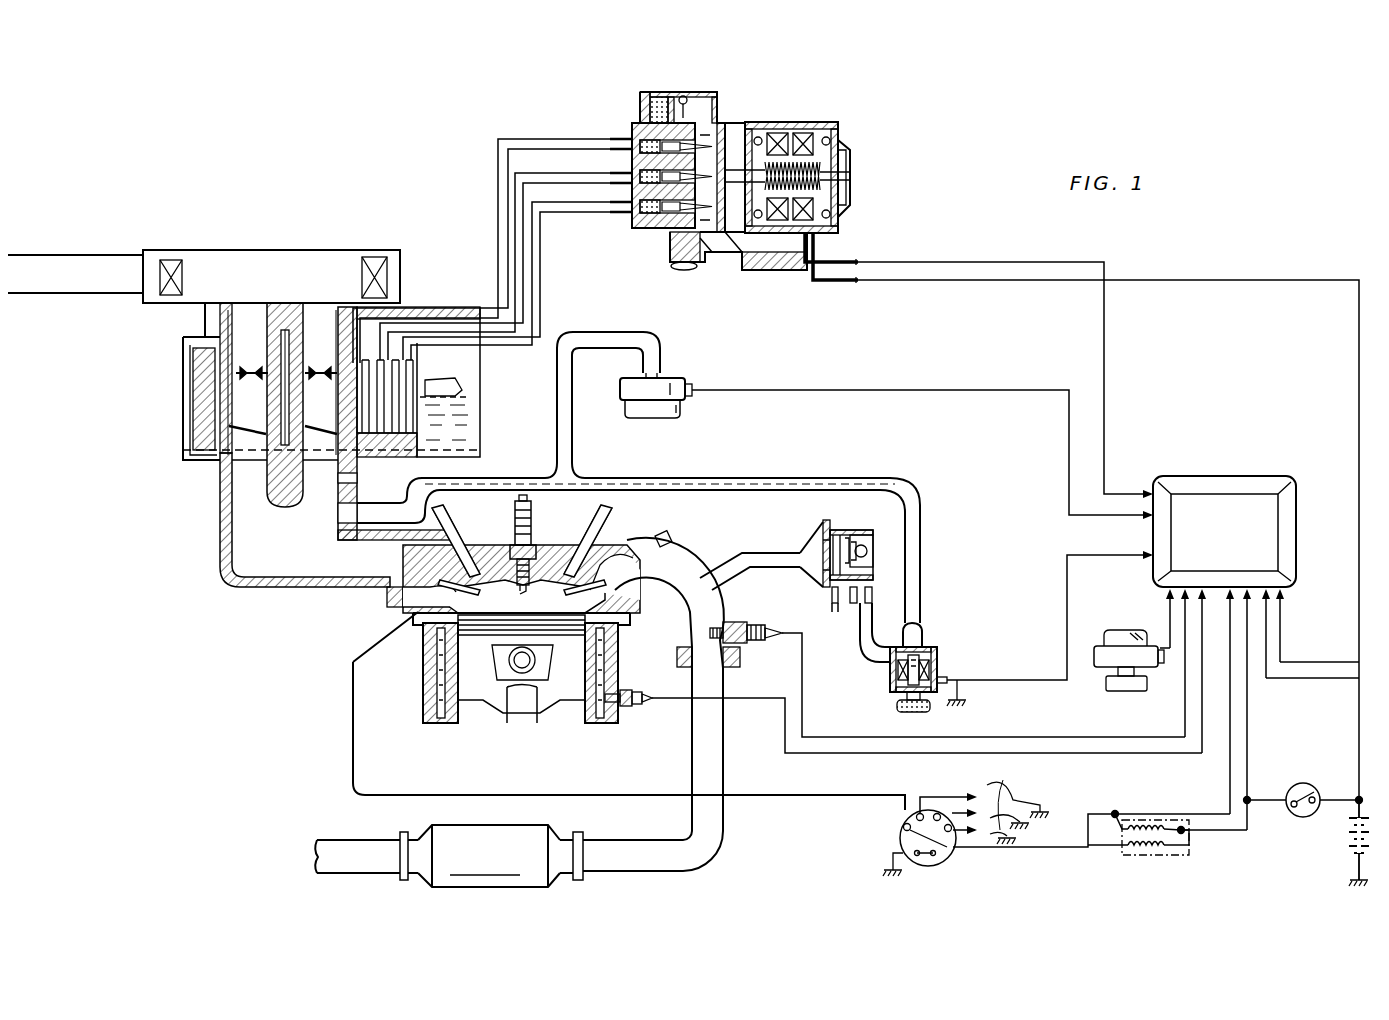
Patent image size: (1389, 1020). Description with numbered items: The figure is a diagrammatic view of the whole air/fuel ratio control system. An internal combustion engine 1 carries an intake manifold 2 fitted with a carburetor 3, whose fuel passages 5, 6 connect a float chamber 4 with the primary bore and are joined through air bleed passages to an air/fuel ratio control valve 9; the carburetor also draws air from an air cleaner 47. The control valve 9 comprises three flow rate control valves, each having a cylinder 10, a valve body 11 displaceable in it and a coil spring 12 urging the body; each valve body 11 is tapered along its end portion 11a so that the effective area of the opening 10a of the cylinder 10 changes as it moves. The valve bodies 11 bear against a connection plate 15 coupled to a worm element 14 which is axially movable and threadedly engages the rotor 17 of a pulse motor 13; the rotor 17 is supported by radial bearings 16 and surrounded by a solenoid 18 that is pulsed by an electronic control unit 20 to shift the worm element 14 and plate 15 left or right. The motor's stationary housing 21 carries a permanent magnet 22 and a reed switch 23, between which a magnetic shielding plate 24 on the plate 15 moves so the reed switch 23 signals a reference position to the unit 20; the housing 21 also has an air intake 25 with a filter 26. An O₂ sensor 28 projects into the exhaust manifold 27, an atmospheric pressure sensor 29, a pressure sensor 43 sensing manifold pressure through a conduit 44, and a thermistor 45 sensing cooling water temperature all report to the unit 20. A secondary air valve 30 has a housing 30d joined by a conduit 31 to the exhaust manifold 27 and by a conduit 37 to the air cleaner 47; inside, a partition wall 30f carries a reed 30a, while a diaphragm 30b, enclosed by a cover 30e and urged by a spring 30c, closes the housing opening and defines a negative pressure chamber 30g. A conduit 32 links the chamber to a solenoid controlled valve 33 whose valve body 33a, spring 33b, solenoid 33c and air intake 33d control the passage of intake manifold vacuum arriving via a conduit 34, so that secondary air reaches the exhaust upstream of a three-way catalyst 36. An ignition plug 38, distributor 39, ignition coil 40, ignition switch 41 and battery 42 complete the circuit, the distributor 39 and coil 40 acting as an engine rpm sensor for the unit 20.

The internal combustion engine 1 is at (413, 671).
The intake manifold 2 is at (313, 580).
The carburetor 3 is at (313, 377).
The float chamber 4 is at (468, 437).
The fuel passage 5 is at (397, 436).
The fuel passage 6 is at (372, 436).
The air/fuel ratio control valve 9 is at (713, 183).
The cylinder 10 is at (690, 118).
The opening 10a is at (725, 120).
The valve body 11 is at (650, 140).
The tapered end portion 11a is at (722, 130).
The coil spring 12 is at (646, 140).
The pulse motor 13 is at (815, 144).
The worm element 14 is at (852, 178).
The connection plate 15 is at (750, 132).
The radial bearings 16 is at (851, 142).
The rotor 17 is at (851, 160).
The solenoid 18 is at (840, 128).
The electronic control unit 20 is at (1218, 477).
The stationary housing 21 is at (668, 250).
The permanent magnet 22 is at (668, 272).
The reed switch 23 is at (695, 273).
The magnetic shielding plate 24 is at (752, 272).
The air intake 25 is at (683, 96).
The filter 26 is at (657, 95).
The exhaust manifold 27 is at (676, 549).
The O₂ sensor 28 is at (776, 633).
The atmospheric pressure sensor 29 is at (1150, 672).
The secondary air valve 30 is at (872, 557).
The reed 30a is at (815, 548).
The diaphragm 30b is at (875, 548).
The spring 30c is at (872, 565).
The housing 30d is at (848, 527).
The cover 30e is at (862, 533).
The partition wall 30f is at (822, 530).
The negative pressure chamber 30g is at (870, 576).
The conduit 31 is at (773, 566).
The conduit 32 is at (872, 622).
The solenoid controlled valve 33 is at (943, 677).
The valve body 33a is at (922, 632).
The spring 33b is at (937, 661).
The solenoid 33c is at (950, 684).
The air intake 33d is at (900, 708).
The conduit 34 is at (921, 505).
The three-way catalyst 36 is at (582, 885).
The conduit 37 is at (836, 614).
The ignition plug 38 is at (533, 525).
The distributor 39 is at (940, 862).
The ignition coil 40 is at (1160, 820).
The ignition switch 41 is at (1303, 783).
The battery 42 is at (1345, 835).
The pressure sensor 43 is at (686, 379).
The conduit 44 is at (574, 439).
The thermistor 45 is at (640, 690).
The air cleaner 47 is at (213, 258).